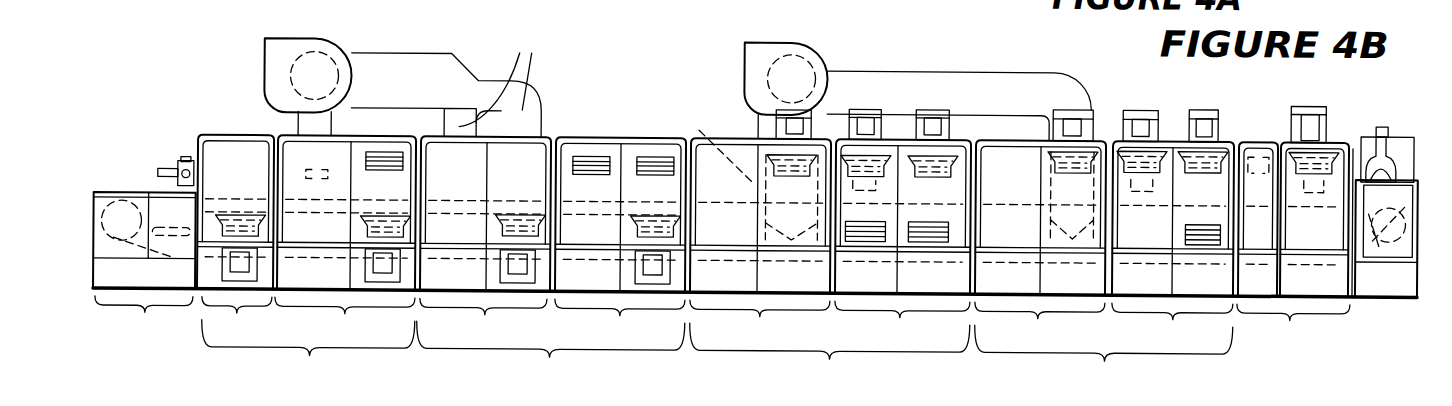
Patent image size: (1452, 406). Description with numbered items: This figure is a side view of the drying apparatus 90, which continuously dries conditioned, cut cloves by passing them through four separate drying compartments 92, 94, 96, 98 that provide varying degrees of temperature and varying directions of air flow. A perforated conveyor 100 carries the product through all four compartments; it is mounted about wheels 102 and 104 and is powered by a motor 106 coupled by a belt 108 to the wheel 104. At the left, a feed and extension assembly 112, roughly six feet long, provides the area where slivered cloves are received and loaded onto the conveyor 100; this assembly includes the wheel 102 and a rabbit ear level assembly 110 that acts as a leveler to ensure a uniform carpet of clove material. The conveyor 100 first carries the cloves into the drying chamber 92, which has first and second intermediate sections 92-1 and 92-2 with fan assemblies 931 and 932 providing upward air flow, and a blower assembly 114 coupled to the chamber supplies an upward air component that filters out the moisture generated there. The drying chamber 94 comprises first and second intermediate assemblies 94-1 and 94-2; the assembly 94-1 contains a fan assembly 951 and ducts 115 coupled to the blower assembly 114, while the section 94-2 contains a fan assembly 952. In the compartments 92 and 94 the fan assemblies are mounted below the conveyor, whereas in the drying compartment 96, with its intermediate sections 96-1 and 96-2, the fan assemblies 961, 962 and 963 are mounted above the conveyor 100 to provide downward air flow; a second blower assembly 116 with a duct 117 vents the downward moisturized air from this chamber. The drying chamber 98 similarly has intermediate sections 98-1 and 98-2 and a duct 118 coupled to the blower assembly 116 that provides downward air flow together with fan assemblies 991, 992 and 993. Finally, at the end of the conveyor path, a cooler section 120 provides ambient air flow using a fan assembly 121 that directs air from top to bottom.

The drying apparatus 90 is at (720, 31).
The drying compartment 92 is at (306, 262).
The first intermediate section 92-1 is at (236, 242).
The second intermediate section 92-2 is at (346, 241).
The fan assembly 931 is at (240, 219).
The fan assembly 932 is at (348, 252).
The drying chamber 94 is at (551, 263).
The first intermediate assembly 94-1 is at (486, 242).
The second intermediate assembly 94-2 is at (621, 244).
The fan assembly 951 is at (488, 251).
The fan assembly 952 is at (622, 252).
The drying compartment 96 is at (849, 217).
The intermediate section 96-1 is at (752, 214).
The intermediate section 96-2 is at (932, 197).
The fan assembly 961 is at (777, 123).
The fan assembly 962 is at (868, 107).
The fan assembly 963 is at (938, 108).
The drying chamber 98 is at (1120, 233).
The intermediate section 98-1 is at (1054, 213).
The intermediate section 98-2 is at (1189, 213).
The fan assembly 991 is at (1082, 121).
The fan assembly 992 is at (1150, 120).
The fan assembly 993 is at (1210, 120).
The conveyor 100 is at (157, 193).
The wheel 102 is at (121, 222).
The wheel 104 is at (1388, 216).
The motor 106 is at (1381, 118).
The belt 108 is at (1415, 185).
The rabbit ear level assembly 110 is at (185, 157).
The feed and extension assembly 112 is at (145, 223).
The blower assembly 114 is at (323, 75).
The ducts 115 is at (504, 79).
The second blower assembly 116 is at (795, 72).
The duct 117 is at (713, 143).
The duct 118 is at (935, 79).
The cooler section 120 is at (1295, 213).
The fan assembly 121 is at (1309, 100).